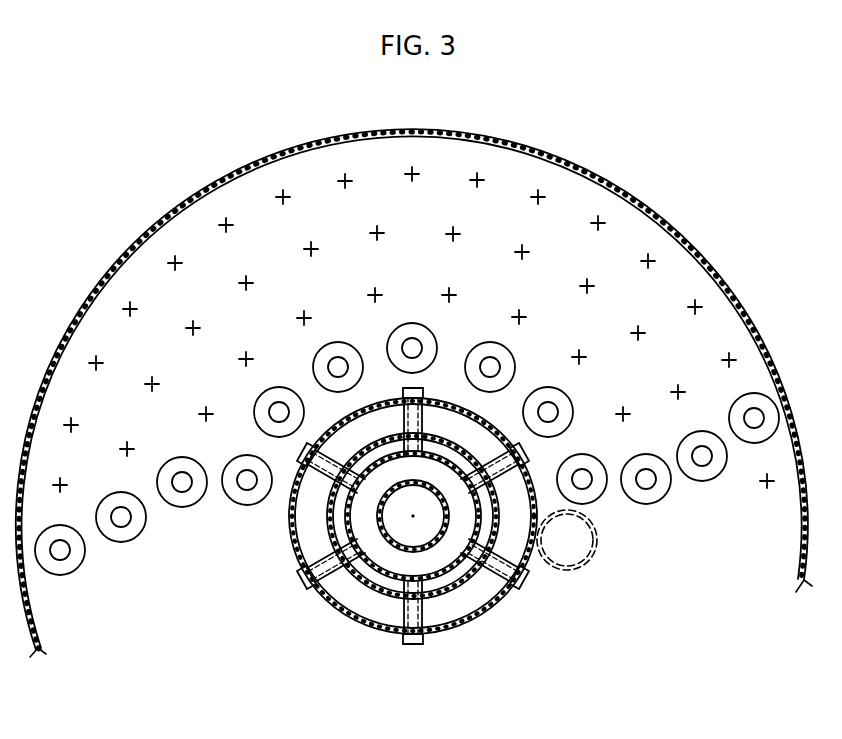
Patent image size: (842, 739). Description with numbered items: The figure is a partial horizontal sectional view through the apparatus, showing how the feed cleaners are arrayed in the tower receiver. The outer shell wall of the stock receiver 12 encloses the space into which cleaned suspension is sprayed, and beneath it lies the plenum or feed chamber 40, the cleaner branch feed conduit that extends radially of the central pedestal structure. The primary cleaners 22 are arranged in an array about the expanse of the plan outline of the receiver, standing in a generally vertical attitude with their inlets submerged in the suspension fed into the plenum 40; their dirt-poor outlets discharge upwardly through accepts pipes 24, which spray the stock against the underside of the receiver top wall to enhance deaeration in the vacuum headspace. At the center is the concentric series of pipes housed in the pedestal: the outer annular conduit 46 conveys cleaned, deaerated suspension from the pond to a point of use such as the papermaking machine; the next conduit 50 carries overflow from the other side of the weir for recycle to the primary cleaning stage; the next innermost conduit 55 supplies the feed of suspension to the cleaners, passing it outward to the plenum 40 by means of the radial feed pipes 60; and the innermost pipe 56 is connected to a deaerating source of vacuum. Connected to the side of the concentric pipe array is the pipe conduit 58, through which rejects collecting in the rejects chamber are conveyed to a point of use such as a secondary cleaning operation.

The stock receiver 12 is at (560, 157).
The plenum or feed chamber 40 is at (233, 329).
The accepts pipes 24 is at (182, 490).
The primary cleaners 22 is at (640, 505).
The conduit 46 is at (445, 617).
The conduit 50 is at (358, 577).
The next innermost conduit 55 is at (400, 565).
The innermost pipe 56 is at (377, 523).
The radial feed pipes 60 is at (492, 577).
The pipe conduit 58 is at (572, 571).